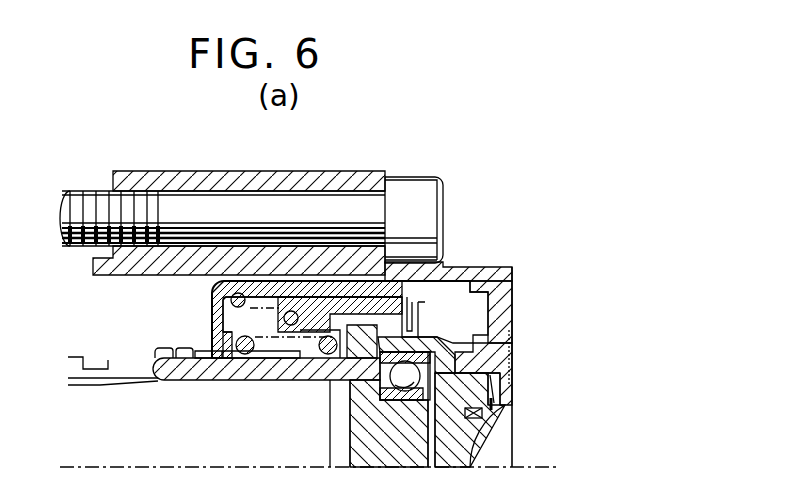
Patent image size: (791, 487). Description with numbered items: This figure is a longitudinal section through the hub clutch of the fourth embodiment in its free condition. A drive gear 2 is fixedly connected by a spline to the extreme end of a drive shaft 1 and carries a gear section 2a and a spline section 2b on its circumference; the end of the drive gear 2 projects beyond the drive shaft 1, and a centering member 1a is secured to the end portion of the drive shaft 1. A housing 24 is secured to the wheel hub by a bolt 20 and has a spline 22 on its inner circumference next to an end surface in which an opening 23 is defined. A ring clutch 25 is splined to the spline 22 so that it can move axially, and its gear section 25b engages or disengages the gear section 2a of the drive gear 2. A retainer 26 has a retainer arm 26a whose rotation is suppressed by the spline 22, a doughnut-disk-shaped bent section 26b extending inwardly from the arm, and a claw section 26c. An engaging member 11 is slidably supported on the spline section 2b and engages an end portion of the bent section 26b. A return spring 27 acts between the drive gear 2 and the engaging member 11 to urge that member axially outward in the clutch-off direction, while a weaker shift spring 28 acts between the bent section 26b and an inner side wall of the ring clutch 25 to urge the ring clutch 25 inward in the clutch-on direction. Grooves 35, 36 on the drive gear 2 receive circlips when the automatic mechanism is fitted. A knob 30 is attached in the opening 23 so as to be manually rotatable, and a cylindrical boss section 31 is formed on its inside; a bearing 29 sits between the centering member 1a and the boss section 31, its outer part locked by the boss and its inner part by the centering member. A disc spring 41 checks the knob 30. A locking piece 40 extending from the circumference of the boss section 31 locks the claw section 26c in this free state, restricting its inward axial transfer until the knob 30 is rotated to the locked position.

The drive shaft 1 is at (242, 452).
The centering member 1a is at (350, 448).
The drive gear 2 is at (208, 378).
The gear section 2a is at (358, 330).
The spline section 2b is at (290, 370).
The engaging member 11 is at (222, 378).
The bolt 20 is at (412, 200).
The spline 22 is at (463, 287).
The opening 23 is at (490, 413).
The housing 24 is at (498, 290).
The ring clutch 25 is at (383, 257).
The gear section 25b is at (295, 322).
The retainer 26 is at (315, 278).
The retainer arm 26a is at (284, 276).
The bent section 26b is at (212, 310).
The claw section 26c is at (410, 322).
The return spring 27 is at (258, 362).
The shift spring 28 is at (276, 250).
The bearing 29 is at (455, 378).
The knob 30 is at (457, 452).
The boss section 31 is at (466, 348).
The groove 35 is at (152, 383).
The groove 36 is at (188, 372).
The locking piece 40 is at (416, 289).
The disc spring 41 is at (503, 384).